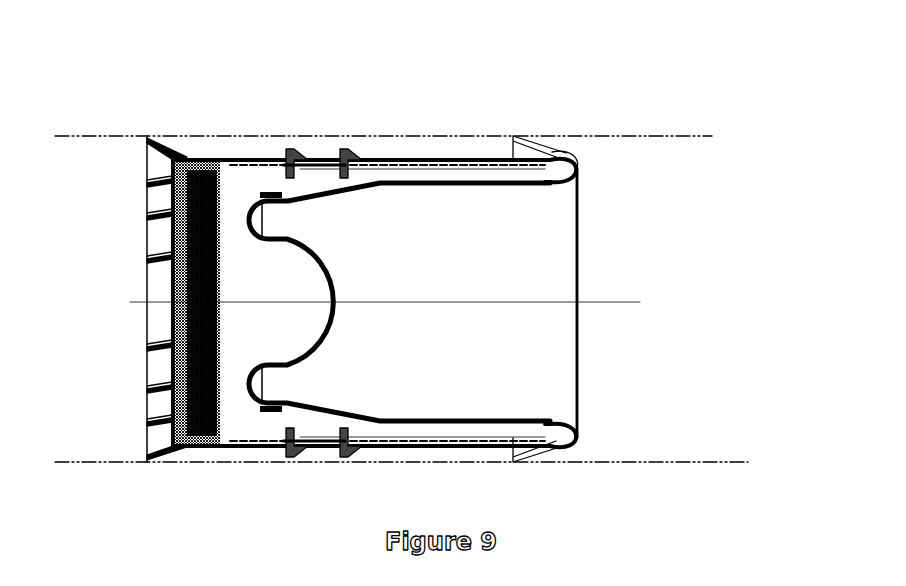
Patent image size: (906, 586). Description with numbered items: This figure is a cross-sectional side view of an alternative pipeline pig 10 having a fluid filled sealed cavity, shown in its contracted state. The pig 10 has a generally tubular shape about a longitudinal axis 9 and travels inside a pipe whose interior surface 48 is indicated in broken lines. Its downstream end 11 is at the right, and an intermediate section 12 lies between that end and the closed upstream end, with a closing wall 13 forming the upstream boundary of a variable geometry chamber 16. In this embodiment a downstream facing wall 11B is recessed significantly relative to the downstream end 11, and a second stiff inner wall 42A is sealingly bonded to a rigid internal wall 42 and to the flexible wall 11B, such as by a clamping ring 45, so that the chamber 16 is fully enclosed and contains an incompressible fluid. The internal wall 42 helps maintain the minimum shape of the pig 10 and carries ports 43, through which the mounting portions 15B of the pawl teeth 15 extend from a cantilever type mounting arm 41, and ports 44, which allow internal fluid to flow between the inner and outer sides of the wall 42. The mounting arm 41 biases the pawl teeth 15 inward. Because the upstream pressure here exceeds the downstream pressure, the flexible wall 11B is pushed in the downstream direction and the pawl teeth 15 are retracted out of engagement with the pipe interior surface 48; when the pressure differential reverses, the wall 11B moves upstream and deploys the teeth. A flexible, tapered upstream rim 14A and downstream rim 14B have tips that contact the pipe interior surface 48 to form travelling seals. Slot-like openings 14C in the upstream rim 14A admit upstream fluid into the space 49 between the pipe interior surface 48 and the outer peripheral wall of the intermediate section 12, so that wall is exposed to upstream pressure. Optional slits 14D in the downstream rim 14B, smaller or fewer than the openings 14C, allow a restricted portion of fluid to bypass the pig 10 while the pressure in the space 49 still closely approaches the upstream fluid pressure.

The longitudinal axis 9 is at (630, 302).
The pig 10 is at (604, 90).
The downstream end 11 is at (578, 252).
The downstream facing wall 11B is at (330, 270).
The intermediate section 12 is at (455, 158).
The closing wall 13 is at (172, 232).
The upstream rim 14A is at (147, 138).
The downstream rim 14B is at (513, 138).
The openings 14C is at (148, 172).
The slits 14D is at (545, 138).
The pawl teeth 15 is at (283, 150).
The mounting portion 15B is at (365, 422).
The variable geometry chamber 16 is at (265, 286).
The mounting arm 41 is at (300, 205).
The internal wall 42 is at (172, 276).
The second stiff inner wall 42A is at (423, 185).
The ports 43 is at (326, 150).
The ports 44 is at (418, 158).
The clamping ring 45 is at (278, 150).
The pipe interior surface 48 is at (666, 148).
The space 49 is at (432, 453).